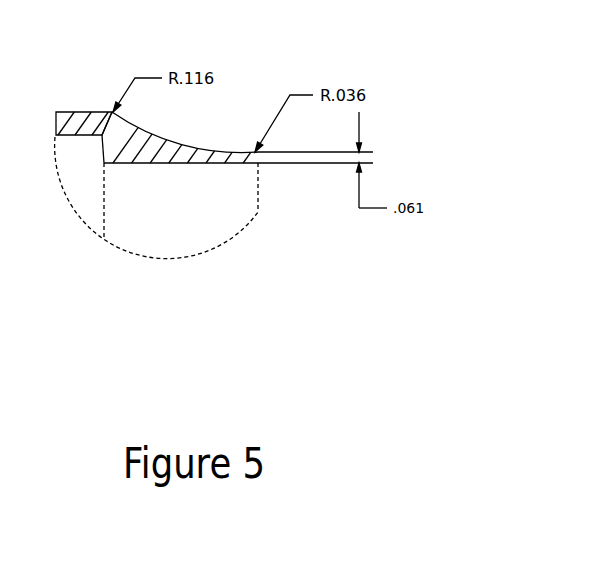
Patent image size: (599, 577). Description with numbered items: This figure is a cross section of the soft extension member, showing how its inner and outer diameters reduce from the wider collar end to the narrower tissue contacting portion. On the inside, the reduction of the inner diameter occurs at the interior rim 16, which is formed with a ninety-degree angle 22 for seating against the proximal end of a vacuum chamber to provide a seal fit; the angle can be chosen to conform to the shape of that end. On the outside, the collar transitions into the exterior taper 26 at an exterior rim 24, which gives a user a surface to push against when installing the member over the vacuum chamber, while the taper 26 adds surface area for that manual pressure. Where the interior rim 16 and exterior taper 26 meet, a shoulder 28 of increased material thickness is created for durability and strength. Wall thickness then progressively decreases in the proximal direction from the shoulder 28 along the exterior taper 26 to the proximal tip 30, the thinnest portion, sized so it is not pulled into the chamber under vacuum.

The interior rim 16 is at (105, 163).
The 90° angle 22 is at (104, 136).
The exterior rim 24 is at (112, 112).
The exterior taper 26 is at (160, 133).
The shoulder 28 is at (120, 134).
The proximal tip 30 is at (256, 157).